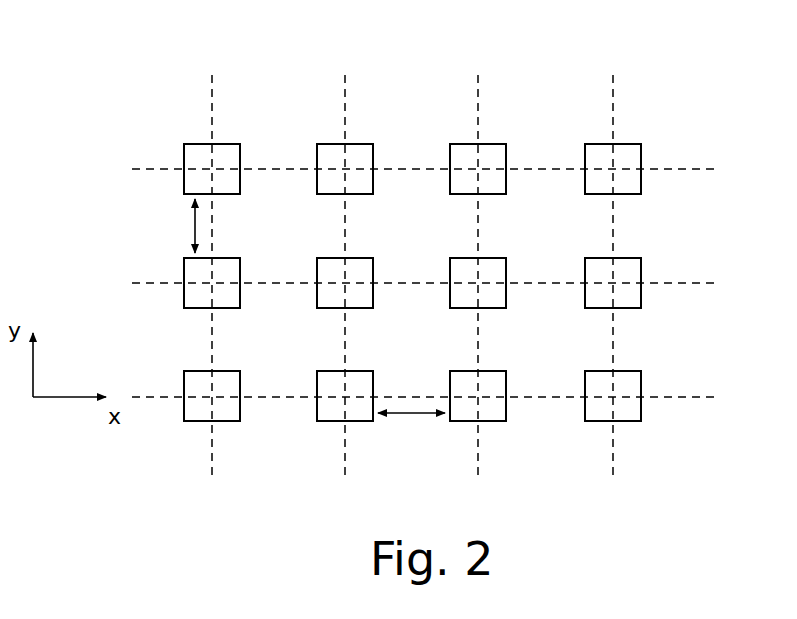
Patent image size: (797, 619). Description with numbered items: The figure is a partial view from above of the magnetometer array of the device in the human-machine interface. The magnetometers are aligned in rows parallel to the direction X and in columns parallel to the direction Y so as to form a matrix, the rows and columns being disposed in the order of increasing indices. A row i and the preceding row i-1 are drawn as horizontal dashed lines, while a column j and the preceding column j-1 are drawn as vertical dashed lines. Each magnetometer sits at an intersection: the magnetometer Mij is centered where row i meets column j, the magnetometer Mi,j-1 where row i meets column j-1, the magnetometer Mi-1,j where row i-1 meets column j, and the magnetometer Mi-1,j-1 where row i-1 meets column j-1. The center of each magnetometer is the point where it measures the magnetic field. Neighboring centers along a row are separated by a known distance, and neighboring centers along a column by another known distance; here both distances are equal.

The row i is at (704, 282).
The row i-1 is at (704, 396).
The column j-1 is at (212, 481).
The column j is at (345, 481).
The magnetometer Mi,j-1 is at (225, 267).
The magnetometer Mij is at (363, 267).
The magnetometer Mi-1,j-1 is at (225, 381).
The magnetometer Mi-1,j is at (363, 381).